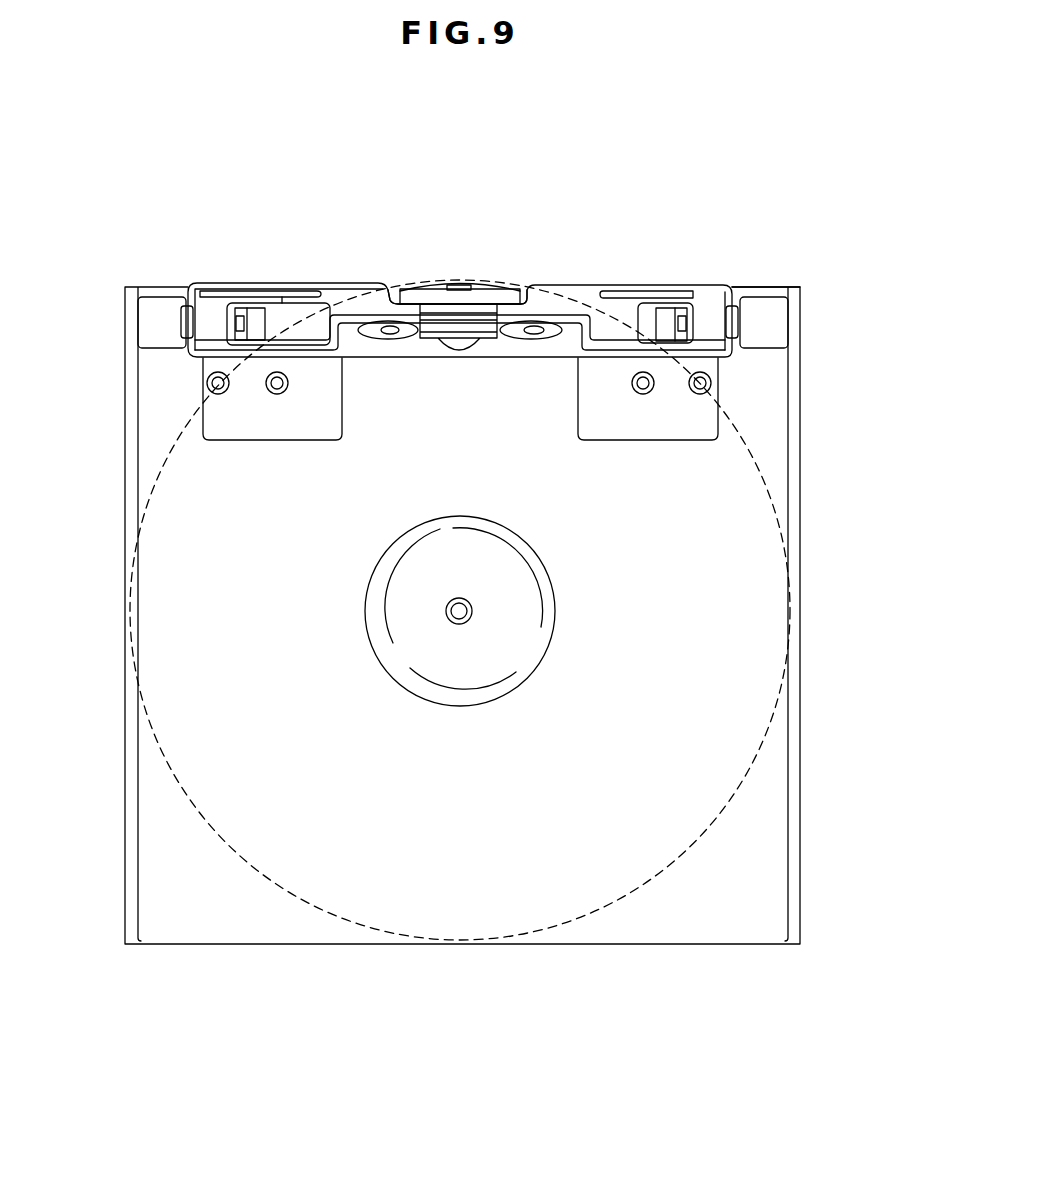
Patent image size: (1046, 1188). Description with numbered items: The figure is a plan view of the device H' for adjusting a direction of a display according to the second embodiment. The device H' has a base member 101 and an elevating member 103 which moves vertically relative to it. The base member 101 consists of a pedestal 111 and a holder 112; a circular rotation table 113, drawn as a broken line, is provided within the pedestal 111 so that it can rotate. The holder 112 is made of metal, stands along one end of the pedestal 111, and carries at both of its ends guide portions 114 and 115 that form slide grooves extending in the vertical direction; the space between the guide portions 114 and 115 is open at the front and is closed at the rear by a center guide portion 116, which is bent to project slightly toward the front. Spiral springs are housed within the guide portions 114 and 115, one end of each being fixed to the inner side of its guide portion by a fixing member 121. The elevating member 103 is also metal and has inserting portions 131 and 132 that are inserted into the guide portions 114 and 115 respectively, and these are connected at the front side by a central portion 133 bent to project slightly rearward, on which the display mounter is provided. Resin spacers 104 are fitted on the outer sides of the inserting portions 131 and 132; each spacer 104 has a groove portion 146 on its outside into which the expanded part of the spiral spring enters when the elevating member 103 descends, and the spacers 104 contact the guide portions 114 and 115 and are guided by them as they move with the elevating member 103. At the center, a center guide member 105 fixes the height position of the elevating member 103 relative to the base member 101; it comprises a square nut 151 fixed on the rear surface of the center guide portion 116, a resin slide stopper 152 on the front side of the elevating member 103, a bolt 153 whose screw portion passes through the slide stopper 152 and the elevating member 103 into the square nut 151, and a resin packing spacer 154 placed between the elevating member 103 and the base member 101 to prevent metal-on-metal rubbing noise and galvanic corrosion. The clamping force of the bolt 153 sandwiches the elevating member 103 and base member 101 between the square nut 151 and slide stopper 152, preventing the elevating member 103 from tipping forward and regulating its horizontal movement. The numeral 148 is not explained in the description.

The base member 101 is at (329, 279).
The elevating member 103 is at (548, 311).
The spacer 104 is at (216, 295).
The center guide member 105 is at (477, 284).
The pedestal 111 is at (385, 300).
The holder 112 is at (735, 280).
The circular rotation table 113 is at (458, 914).
The guide portion 114 is at (290, 292).
The guide portion 115 is at (608, 292).
The center guide portion 116 is at (400, 300).
The fixing member 121 is at (183, 322).
The inserting portion 131 is at (240, 340).
The inserting portion 132 is at (682, 344).
The central portion 133 is at (493, 338).
The groove portion 146 is at (183, 306).
The holder frame 148 is at (255, 320).
The square nut 151 is at (437, 296).
The slide stopper 152 is at (432, 340).
The bolt 153 is at (462, 351).
The packing spacer 154 is at (500, 294).
The device for adjusting a direction of a display H' is at (462, 242).